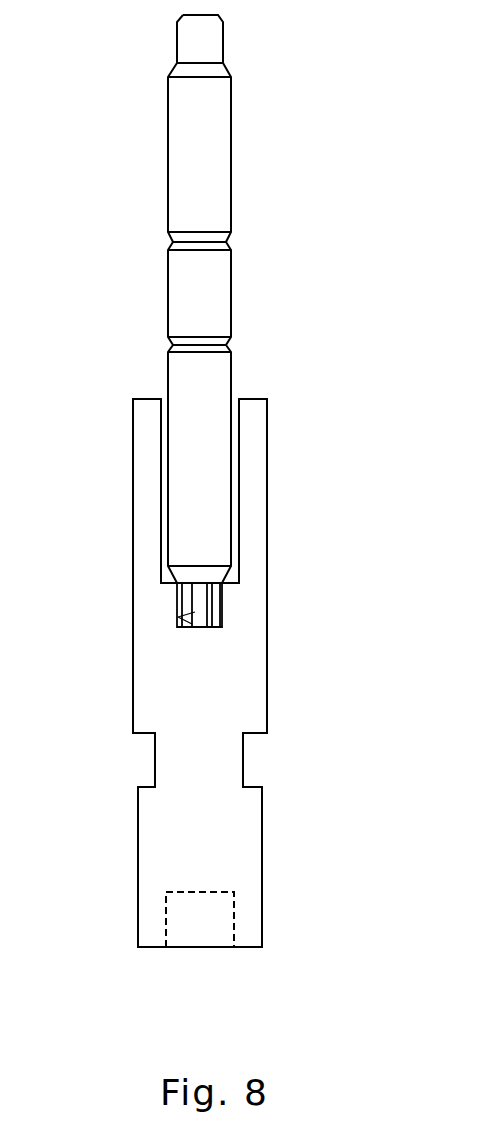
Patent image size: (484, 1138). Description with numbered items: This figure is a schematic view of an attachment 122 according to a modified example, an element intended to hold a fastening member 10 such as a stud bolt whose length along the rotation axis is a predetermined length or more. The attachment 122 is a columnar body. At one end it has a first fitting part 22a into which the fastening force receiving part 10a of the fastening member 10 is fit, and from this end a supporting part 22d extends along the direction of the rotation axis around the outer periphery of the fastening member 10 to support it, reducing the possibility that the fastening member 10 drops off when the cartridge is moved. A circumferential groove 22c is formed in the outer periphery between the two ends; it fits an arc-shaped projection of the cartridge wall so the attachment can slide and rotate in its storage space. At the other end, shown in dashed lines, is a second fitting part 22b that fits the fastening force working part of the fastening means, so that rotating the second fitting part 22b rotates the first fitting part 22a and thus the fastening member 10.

The fastening member 10 is at (250, 143).
The fastening force receiving part 10a is at (207, 609).
The attachment 122 is at (294, 665).
The supporting part 22d is at (145, 482).
The first fitting part 22a is at (199, 628).
The circumferential groove 22c is at (155, 763).
The second fitting part 22b is at (234, 918).